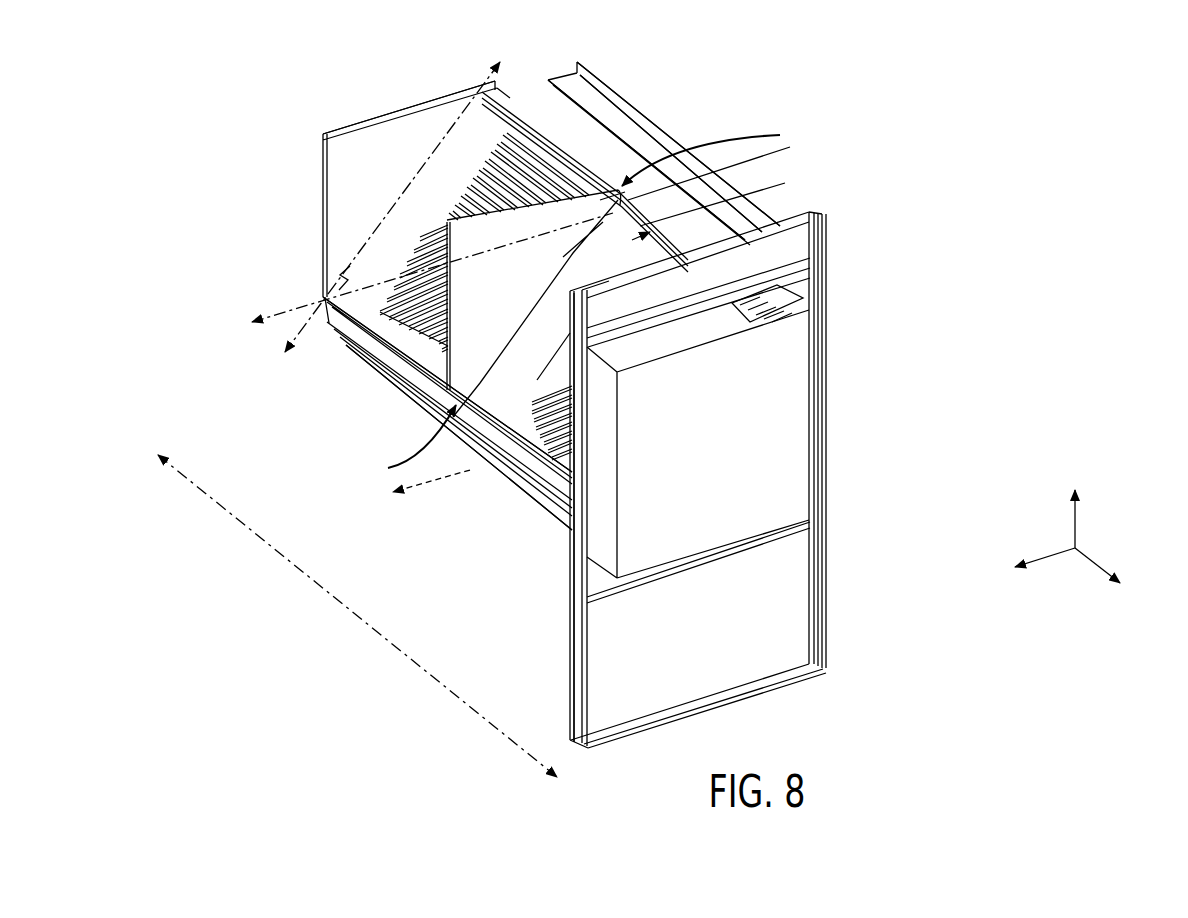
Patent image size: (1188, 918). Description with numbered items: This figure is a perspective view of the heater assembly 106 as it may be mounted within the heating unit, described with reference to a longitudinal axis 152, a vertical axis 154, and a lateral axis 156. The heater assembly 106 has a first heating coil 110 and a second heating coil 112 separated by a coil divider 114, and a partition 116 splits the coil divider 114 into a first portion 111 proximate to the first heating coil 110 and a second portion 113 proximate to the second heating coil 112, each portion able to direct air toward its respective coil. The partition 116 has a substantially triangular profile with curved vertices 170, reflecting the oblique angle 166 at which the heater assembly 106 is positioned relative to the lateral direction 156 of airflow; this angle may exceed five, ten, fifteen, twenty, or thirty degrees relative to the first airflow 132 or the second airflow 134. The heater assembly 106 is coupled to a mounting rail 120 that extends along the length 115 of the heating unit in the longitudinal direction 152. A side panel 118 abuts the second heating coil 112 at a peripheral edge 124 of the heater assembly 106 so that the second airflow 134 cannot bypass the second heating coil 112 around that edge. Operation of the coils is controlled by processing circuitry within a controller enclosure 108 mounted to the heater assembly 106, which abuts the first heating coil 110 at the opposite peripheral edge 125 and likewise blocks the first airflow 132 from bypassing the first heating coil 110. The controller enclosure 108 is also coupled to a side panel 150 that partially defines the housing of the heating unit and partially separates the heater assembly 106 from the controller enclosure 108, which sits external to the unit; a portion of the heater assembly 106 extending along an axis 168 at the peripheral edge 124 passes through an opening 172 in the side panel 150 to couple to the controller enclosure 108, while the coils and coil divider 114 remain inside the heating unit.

The heater assembly 106 is at (502, 487).
The controller enclosure 108 is at (792, 393).
The first heating coil 110 is at (537, 405).
The first portion 111 is at (742, 198).
The second heating coil 112 is at (540, 130).
The second portion 113 is at (650, 127).
The coil divider 114 is at (712, 176).
The length 115 is at (295, 565).
The partition 116 is at (427, 420).
The side panel 118 is at (360, 128).
The mounting rail 120 is at (600, 95).
The peripheral edge 124 is at (437, 93).
The peripheral edge 125 is at (566, 547).
The first airflow 132 is at (463, 473).
The second airflow 134 is at (329, 330).
The side panel 150 is at (800, 240).
The longitudinal axis 152 is at (1100, 560).
The vertical axis 154 is at (1070, 521).
The lateral axis 156 is at (1052, 555).
The oblique angle 166 is at (347, 262).
The axis 168 is at (462, 105).
The curved vertices 170 is at (573, 305).
The opening 172 is at (817, 326).